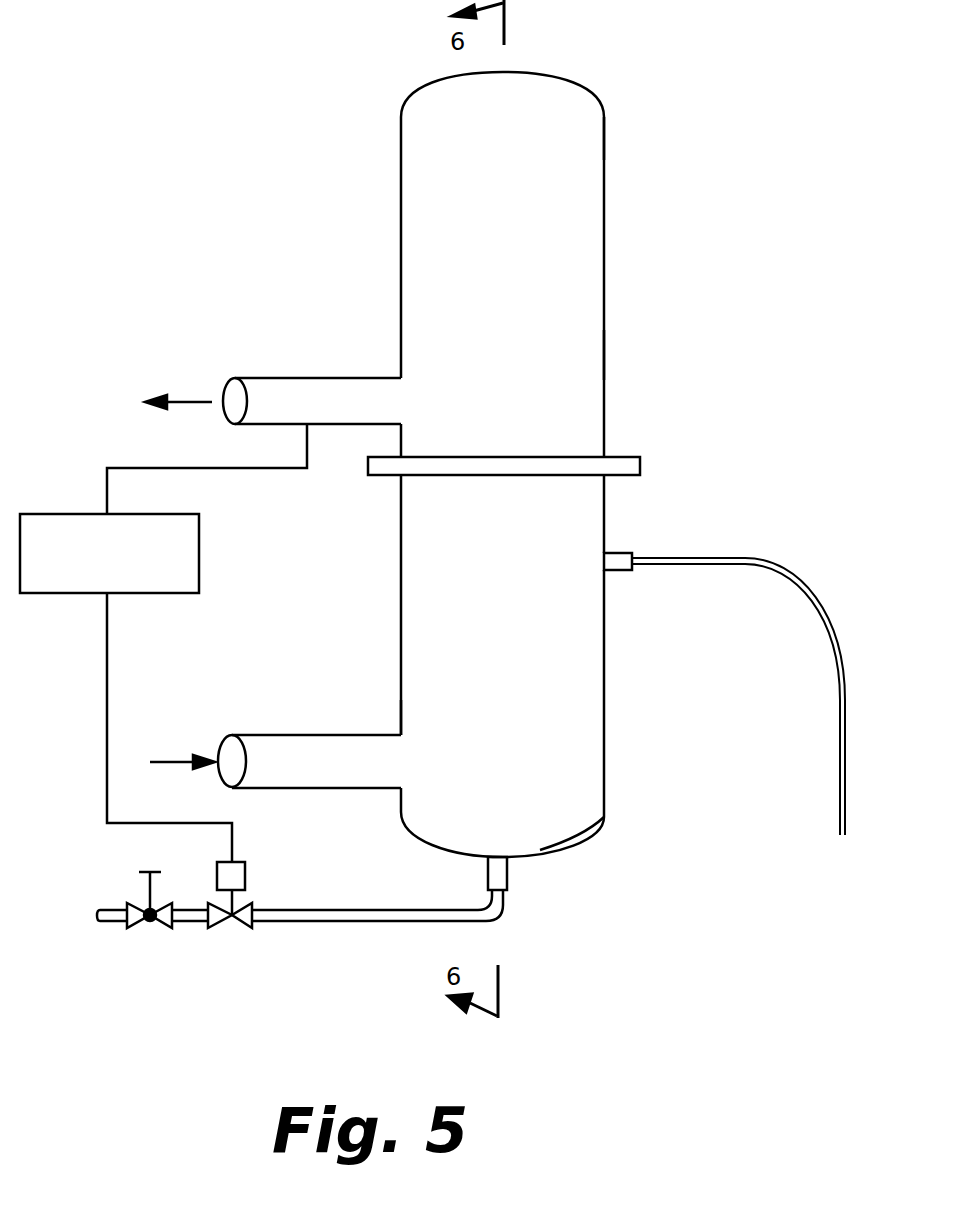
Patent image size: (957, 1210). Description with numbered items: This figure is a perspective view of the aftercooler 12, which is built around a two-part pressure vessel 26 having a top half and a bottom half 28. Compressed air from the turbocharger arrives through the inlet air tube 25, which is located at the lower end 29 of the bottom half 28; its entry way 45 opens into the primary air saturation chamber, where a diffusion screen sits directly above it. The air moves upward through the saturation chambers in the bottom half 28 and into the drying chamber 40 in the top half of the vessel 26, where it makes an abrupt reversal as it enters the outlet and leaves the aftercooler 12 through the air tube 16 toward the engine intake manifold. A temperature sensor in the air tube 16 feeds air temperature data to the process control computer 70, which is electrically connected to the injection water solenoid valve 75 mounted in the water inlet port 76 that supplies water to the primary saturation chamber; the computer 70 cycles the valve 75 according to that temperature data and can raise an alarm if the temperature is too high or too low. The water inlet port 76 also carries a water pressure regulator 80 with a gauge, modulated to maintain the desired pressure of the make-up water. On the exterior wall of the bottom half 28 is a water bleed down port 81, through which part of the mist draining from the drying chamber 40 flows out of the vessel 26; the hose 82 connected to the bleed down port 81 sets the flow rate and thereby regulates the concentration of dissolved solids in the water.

The aftercooler 12 is at (604, 285).
The air tube 16 is at (290, 378).
The inlet air tube 25 is at (265, 733).
The pressure vessel 26 is at (604, 358).
The bottom half 28 is at (398, 663).
The lower end 29 is at (565, 848).
The drying chamber 40 is at (606, 118).
The entry way 45 is at (397, 733).
The process control computer 70 is at (199, 546).
The injection water solenoid valve 75 is at (216, 930).
The water inlet port 76 is at (488, 915).
The water pressure regulator 80 is at (143, 930).
The water bleed down port 81 is at (618, 553).
The hose 82 is at (845, 688).